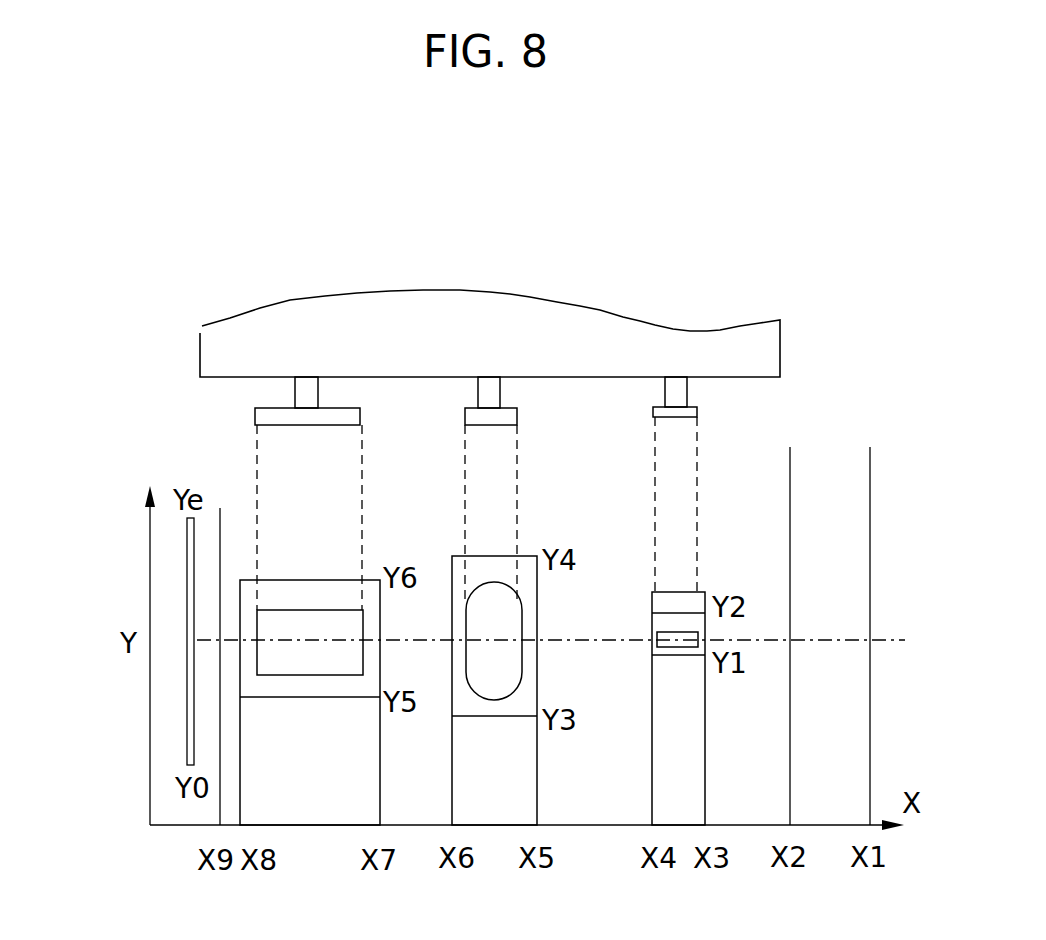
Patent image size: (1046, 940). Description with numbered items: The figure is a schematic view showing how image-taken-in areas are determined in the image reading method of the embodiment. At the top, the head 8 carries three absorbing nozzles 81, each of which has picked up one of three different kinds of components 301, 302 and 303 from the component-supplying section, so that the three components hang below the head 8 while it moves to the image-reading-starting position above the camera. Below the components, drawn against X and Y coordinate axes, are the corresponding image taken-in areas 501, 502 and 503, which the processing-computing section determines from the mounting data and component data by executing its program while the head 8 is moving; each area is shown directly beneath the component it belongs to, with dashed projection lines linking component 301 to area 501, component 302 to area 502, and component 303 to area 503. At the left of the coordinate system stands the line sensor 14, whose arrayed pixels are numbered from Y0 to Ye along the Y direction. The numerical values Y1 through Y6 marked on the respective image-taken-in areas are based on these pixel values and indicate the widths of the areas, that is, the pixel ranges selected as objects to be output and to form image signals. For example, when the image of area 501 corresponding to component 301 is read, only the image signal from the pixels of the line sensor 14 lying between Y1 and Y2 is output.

The head 8 is at (770, 352).
The absorbing nozzles 81 is at (302, 393).
The line sensor 14 is at (187, 558).
The component 301 is at (692, 412).
The component 302 is at (507, 412).
The component 303 is at (338, 417).
The image taken-in area 501 is at (672, 623).
The image taken-in area 502 is at (492, 572).
The image taken-in area 503 is at (318, 588).